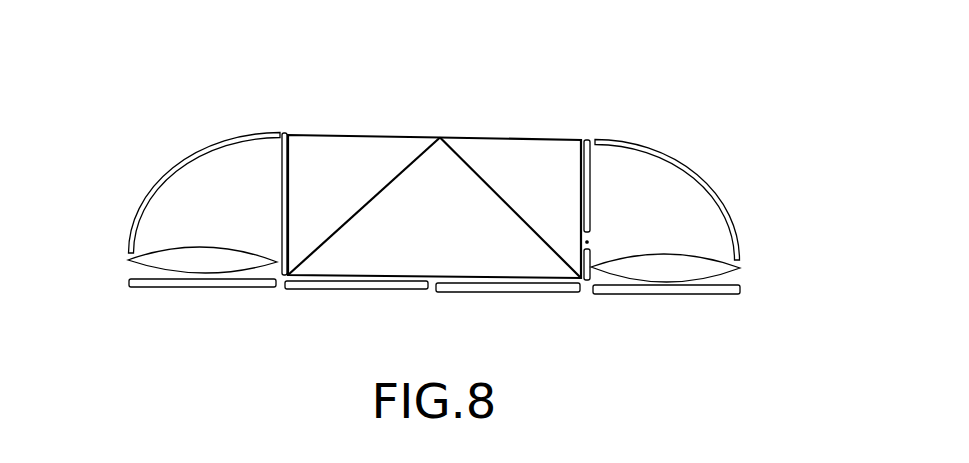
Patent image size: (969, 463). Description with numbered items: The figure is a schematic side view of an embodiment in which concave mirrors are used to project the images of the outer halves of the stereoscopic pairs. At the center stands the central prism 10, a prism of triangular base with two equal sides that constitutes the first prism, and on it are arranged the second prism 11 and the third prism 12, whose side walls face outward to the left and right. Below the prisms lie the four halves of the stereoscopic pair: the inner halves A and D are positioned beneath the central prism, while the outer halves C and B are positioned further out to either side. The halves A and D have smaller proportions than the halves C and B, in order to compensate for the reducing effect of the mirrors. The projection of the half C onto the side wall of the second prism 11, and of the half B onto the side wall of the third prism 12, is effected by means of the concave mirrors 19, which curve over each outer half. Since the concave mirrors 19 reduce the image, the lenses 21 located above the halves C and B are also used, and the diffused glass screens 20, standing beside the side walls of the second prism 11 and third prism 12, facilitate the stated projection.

The central prism 10 is at (402, 245).
The second prism 11 is at (348, 165).
The third prism 12 is at (513, 170).
The concave mirrors 19 is at (203, 153).
The diffused glass screens 20 is at (283, 170).
The lenses 21 is at (207, 267).
The half A is at (363, 285).
The half B is at (643, 292).
The half C is at (218, 283).
The half D is at (517, 287).